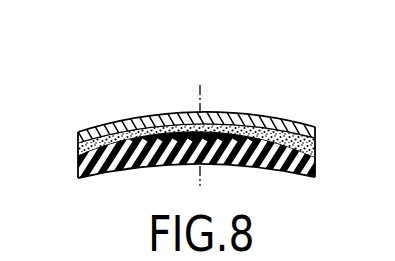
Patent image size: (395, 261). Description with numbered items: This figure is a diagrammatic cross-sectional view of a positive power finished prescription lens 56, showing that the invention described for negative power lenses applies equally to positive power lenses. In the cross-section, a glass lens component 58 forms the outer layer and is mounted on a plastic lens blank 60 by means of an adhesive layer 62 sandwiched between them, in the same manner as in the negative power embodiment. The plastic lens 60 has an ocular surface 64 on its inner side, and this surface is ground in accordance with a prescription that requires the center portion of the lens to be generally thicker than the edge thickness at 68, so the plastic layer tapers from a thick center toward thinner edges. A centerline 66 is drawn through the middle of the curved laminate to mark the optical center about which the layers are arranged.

The positive power finished prescription lens 56 is at (195, 115).
The glass lens component 58 is at (253, 120).
The plastic lens blank 60 is at (285, 170).
The adhesive layer 62 is at (313, 156).
The ocular surface 64 is at (114, 176).
The centerline 66 is at (202, 90).
The edge thickness 68 is at (80, 178).